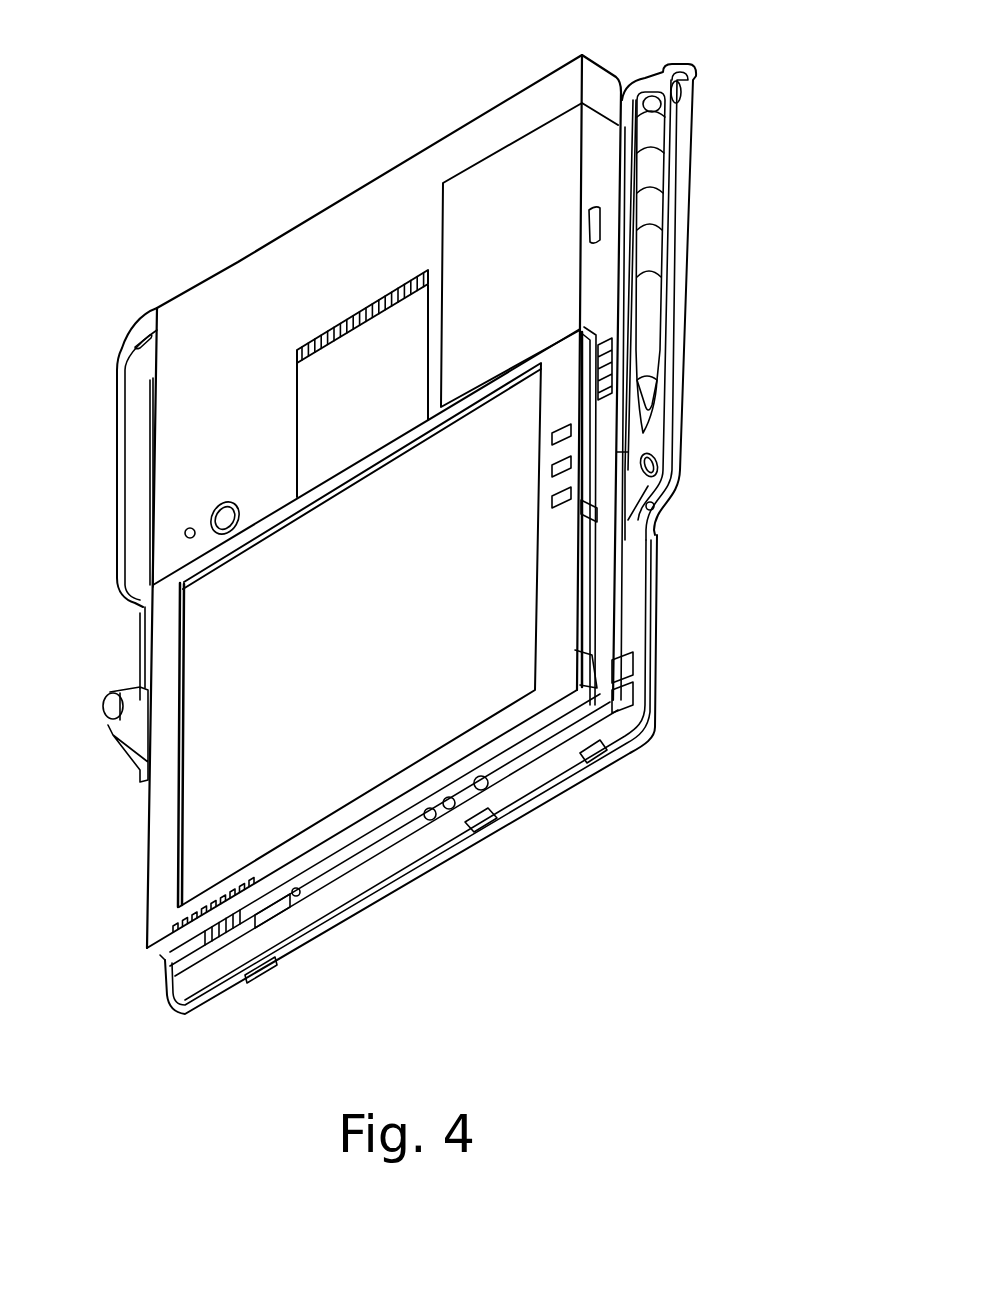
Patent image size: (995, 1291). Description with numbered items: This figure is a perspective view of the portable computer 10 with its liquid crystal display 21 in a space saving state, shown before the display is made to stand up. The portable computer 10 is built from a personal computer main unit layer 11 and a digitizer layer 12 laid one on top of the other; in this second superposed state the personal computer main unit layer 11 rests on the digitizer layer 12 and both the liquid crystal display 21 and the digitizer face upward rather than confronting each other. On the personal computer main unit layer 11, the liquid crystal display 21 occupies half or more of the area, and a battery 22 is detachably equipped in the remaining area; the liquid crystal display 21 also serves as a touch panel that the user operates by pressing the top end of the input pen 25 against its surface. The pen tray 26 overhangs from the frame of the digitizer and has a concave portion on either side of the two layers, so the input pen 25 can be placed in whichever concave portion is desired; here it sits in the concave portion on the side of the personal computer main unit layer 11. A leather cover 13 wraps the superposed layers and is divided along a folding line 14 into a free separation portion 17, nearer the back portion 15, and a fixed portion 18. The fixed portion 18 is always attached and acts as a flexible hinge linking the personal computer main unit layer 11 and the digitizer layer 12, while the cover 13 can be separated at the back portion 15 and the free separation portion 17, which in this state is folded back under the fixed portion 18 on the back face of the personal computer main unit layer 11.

The portable computer 10 is at (450, 47).
The personal computer main unit layer 11 is at (548, 740).
The digitizer layer 12 is at (523, 795).
The cover 13 is at (293, 972).
The folding line 14 is at (428, 867).
The back portion 15 is at (195, 1018).
The free separation portion 17 is at (357, 923).
The fixed portion 18 is at (315, 912).
The liquid crystal display 21 is at (232, 768).
The battery 22 is at (472, 203).
The input pen 25 is at (648, 333).
The pen tray 26 is at (652, 443).